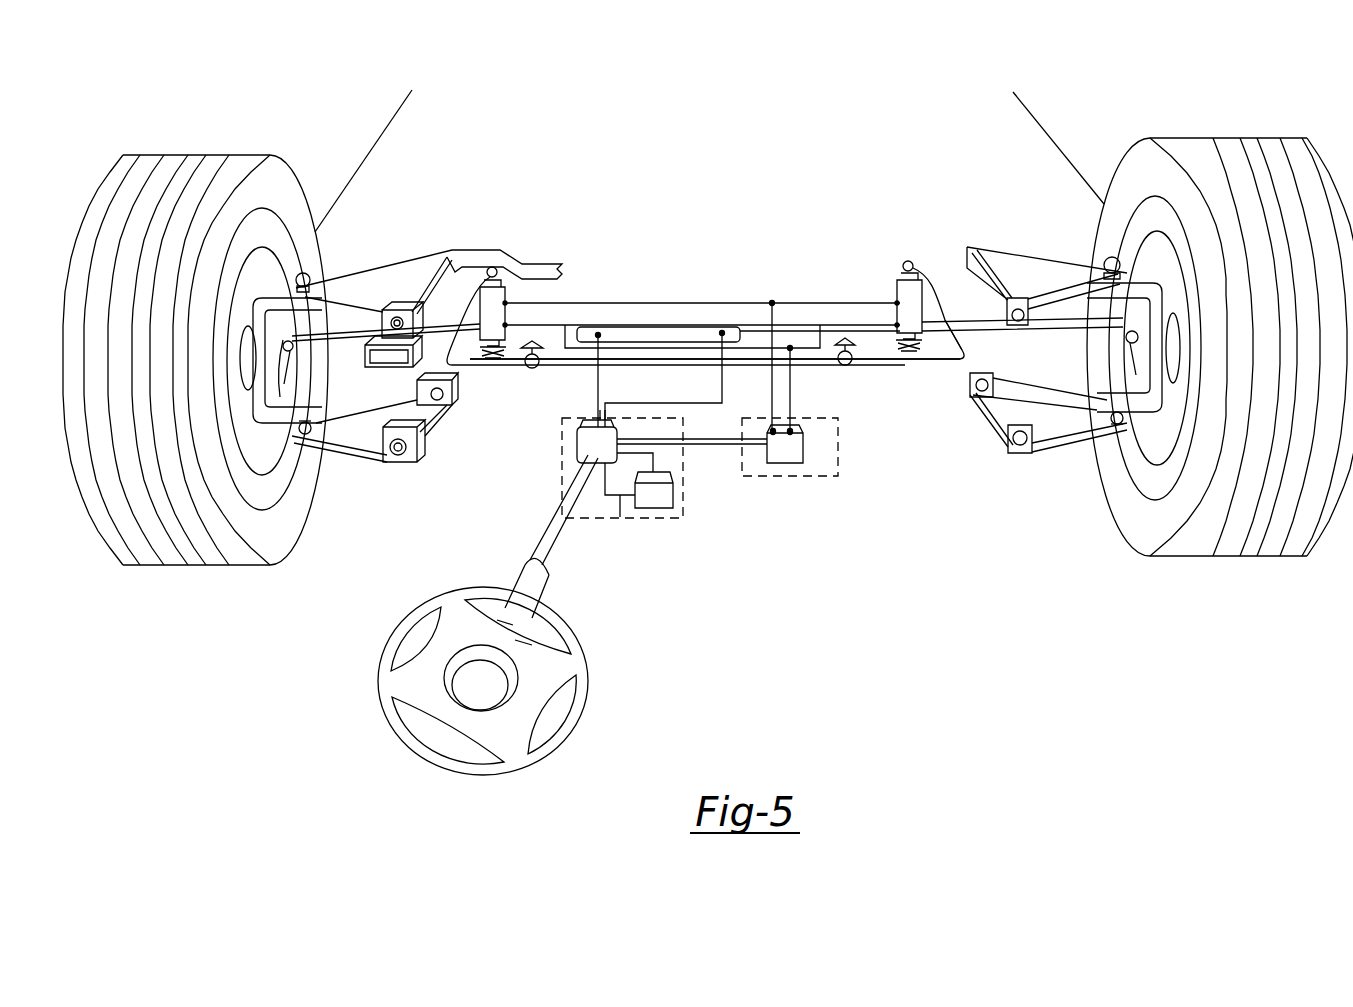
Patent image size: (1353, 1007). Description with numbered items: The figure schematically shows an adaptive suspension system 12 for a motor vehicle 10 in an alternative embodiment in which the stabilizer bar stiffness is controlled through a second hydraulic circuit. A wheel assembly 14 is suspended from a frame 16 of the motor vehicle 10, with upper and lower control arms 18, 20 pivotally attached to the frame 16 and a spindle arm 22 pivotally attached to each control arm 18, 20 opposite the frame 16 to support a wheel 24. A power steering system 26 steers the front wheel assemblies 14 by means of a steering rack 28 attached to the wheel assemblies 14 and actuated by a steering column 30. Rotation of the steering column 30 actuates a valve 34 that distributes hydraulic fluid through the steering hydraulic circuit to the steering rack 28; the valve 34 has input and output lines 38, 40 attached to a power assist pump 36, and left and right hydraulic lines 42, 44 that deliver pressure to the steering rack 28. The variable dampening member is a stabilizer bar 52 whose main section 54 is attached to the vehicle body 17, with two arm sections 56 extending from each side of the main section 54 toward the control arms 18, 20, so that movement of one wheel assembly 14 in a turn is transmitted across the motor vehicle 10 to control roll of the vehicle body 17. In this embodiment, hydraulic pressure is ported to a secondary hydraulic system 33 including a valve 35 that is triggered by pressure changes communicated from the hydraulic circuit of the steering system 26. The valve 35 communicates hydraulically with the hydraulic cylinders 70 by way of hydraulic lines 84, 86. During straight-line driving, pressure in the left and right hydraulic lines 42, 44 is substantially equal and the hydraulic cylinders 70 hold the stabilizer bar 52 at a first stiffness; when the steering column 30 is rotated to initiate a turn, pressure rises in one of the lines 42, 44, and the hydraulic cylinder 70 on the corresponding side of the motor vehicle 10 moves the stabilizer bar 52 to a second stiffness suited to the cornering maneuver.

The motor vehicle 10 is at (1040, 98).
The adaptive suspension system 12 is at (790, 163).
The wheel assembly 14 is at (188, 324).
The frame 16 is at (487, 250).
The vehicle body 17 is at (530, 343).
The upper control arm 18 is at (711, 228).
The lower control arm 20 is at (352, 436).
The spindle arm 22 is at (251, 357).
The wheel 24 is at (197, 158).
The power steering system 26 is at (647, 598).
The steering rack 28 is at (735, 330).
The steering column 30 is at (552, 535).
The secondary hydraulic system 33 is at (823, 468).
The valve 34 is at (575, 453).
The valve 35 is at (767, 455).
The power assist pump 36 is at (650, 503).
The input line 38 is at (620, 517).
The output line 40 is at (657, 458).
The left hydraulic line 42 is at (603, 413).
The right hydraulic line 44 is at (650, 403).
The stabilizer bar 52 is at (937, 368).
The main section 54 is at (708, 360).
The arm section 56 is at (450, 323).
The hydraulic cylinder 70 is at (520, 297).
The hydraulic line 84 is at (772, 405).
The hydraulic line 86 is at (790, 400).